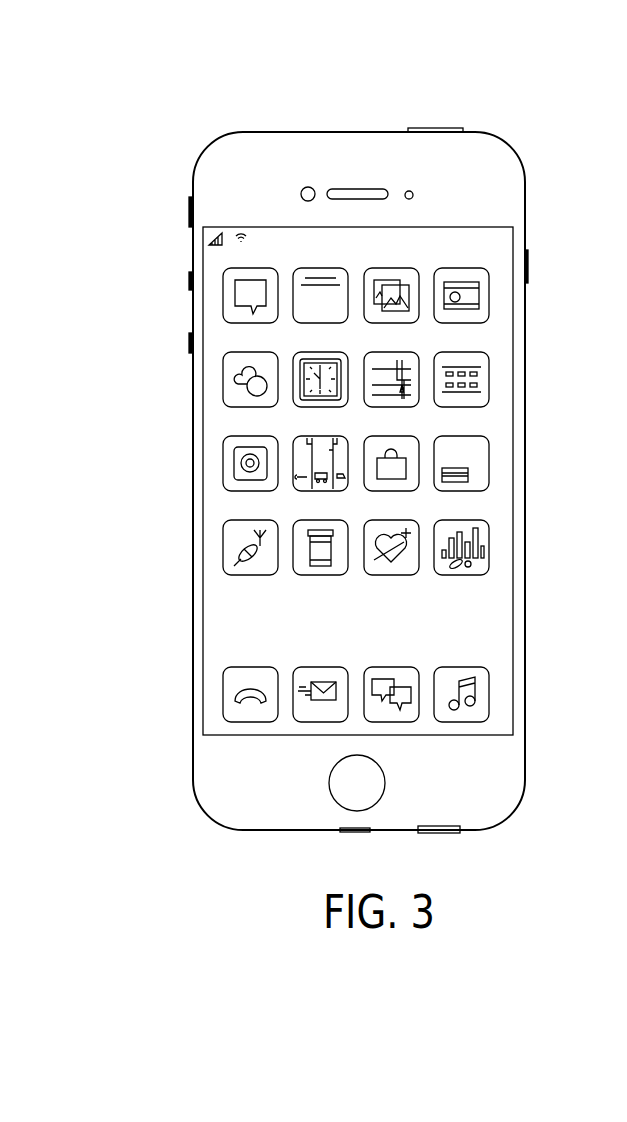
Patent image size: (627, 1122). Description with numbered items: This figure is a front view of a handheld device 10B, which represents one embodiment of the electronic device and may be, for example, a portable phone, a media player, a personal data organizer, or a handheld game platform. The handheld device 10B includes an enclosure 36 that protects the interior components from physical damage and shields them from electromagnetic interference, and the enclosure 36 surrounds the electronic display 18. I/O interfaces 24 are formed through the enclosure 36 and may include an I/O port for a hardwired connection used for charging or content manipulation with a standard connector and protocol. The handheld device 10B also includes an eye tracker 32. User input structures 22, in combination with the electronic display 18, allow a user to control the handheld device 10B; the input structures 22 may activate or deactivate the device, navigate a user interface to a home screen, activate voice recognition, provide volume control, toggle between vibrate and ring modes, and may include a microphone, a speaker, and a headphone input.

The handheld device 10B is at (183, 120).
The electronic display 18 is at (513, 548).
The user input structures 22 is at (436, 128).
The I/O interfaces 24 is at (353, 832).
The eye tracker 32 is at (302, 189).
The enclosure 36 is at (524, 212).